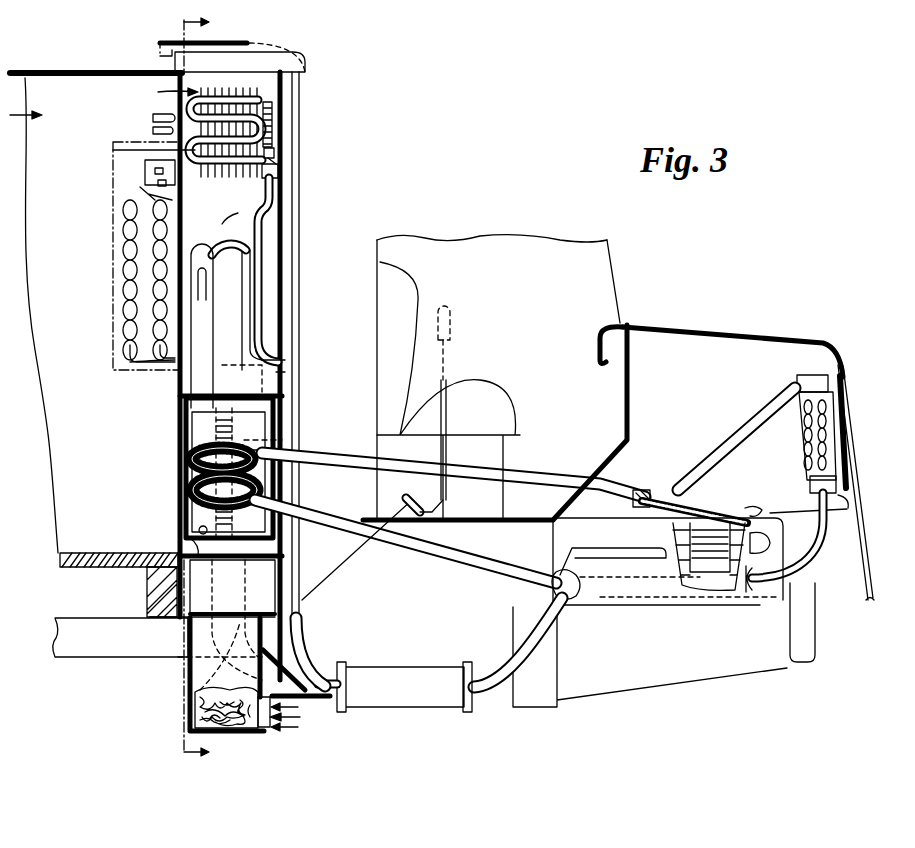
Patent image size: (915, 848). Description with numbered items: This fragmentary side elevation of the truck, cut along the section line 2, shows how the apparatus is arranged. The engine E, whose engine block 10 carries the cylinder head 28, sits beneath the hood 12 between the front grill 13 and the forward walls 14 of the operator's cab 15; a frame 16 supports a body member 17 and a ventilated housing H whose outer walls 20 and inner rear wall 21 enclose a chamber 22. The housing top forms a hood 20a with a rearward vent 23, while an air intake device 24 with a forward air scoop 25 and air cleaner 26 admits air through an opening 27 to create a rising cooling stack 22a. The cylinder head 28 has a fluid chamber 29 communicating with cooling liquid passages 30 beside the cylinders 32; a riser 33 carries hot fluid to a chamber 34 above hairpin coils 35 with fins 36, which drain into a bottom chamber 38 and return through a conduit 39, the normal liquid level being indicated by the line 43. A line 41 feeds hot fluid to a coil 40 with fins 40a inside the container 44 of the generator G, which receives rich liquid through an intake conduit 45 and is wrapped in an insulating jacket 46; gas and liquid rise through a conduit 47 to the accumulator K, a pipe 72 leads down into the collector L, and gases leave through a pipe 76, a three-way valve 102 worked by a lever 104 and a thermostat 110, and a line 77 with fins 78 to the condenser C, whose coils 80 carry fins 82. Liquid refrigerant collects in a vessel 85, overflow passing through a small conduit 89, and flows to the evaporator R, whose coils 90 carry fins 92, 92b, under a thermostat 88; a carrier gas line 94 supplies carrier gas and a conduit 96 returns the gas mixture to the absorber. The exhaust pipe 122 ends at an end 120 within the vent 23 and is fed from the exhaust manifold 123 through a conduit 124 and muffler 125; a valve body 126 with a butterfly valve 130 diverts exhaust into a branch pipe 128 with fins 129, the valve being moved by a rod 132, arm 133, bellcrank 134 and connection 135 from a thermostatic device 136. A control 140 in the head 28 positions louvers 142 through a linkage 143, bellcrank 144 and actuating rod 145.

The section line 2 is at (204, 390).
The engine block 10 is at (772, 545).
The hood 12 is at (725, 335).
The front grill 13 is at (847, 400).
The forward walls 14 is at (624, 440).
The operator's cab 15 is at (540, 255).
The frame 16 is at (80, 660).
The body member 17 is at (58, 76).
The outer walls 20 is at (305, 272).
The hood 20a is at (235, 43).
The inner rear wall 21 is at (188, 404).
The chamber 22 is at (284, 310).
The air column or cooling stack 22a is at (170, 584).
The vent 23 is at (158, 53).
The air intake device 24 is at (190, 685).
The air scoop or intake 25 is at (300, 713).
The filter or air cleaner 26 is at (236, 725).
The opening 27 is at (205, 615).
The cylinder head 28 is at (632, 498).
The fluid chamber 29 is at (684, 500).
The cooling liquid passages 30 is at (709, 536).
The engine cylinders 32 is at (730, 512).
The riser 33 is at (760, 402).
The chamber 34 is at (814, 374).
The hairpin coils 35 is at (828, 432).
The cooling fins 36 is at (832, 416).
The bottom chamber 38 is at (840, 484).
The conduit 39 is at (816, 538).
The heating coil 40 is at (272, 470).
The heat distributing fins 40a is at (282, 445).
The line 41 is at (622, 482).
The line 43 is at (722, 508).
The container 44 is at (195, 495).
The intake conduit 45 is at (198, 524).
The insulating casing or jacket 46 is at (190, 540).
The upwardly extending conduit 47 is at (180, 396).
The gas and vapor conducting pipe 72 is at (242, 224).
The pipe 76 is at (272, 200).
The inclined line 77 is at (276, 148).
The cooling fins 78 is at (274, 123).
The hairpin coils 80 is at (113, 148).
The cooling fins 82 is at (232, 100).
The liquid refrigerant accumulating vessel 85 is at (147, 172).
The thermostat 88 is at (140, 188).
The conduit 89 is at (156, 183).
The coils 90 is at (124, 258).
The fins 92 is at (122, 230).
The pipe 92b is at (417, 549).
The carrier gas line 94 is at (218, 226).
The conduit 96 is at (168, 365).
The three-way rotary valve 102 is at (280, 168).
The lever 104 is at (278, 161).
The thermostat 110 is at (162, 130).
The end of exhaust pipe 120 is at (255, 62).
The exhaust pipe 122 is at (305, 80).
The exhaust manifold 123 is at (641, 558).
The conduit 124 is at (540, 640).
The muffler 125 is at (402, 688).
The three-way valve body 126 is at (304, 668).
The branch exhaust pipe 128 is at (222, 593).
The heat distributing fins 129 is at (270, 408).
The butterfly valve 130 is at (328, 676).
The rod or cable 132 is at (368, 560).
The arm 133 is at (196, 672).
The bellcrank 134 is at (424, 505).
The connection 135 is at (447, 420).
The thermostatically controlled device 136 is at (162, 116).
The control 140 is at (774, 500).
The adjustable louvers 142 is at (842, 378).
The linkage 143 is at (850, 511).
The bellcrank 144 is at (850, 506).
The actuating rod 145 is at (848, 466).
The condenser C is at (170, 90).
The internal combustion engine E is at (646, 665).
The generator G is at (190, 436).
The ventilated housing H is at (294, 212).
The accumulator and separator K is at (230, 329).
The liquid collector L is at (290, 382).
The evaporator or refrigerator R is at (92, 260).